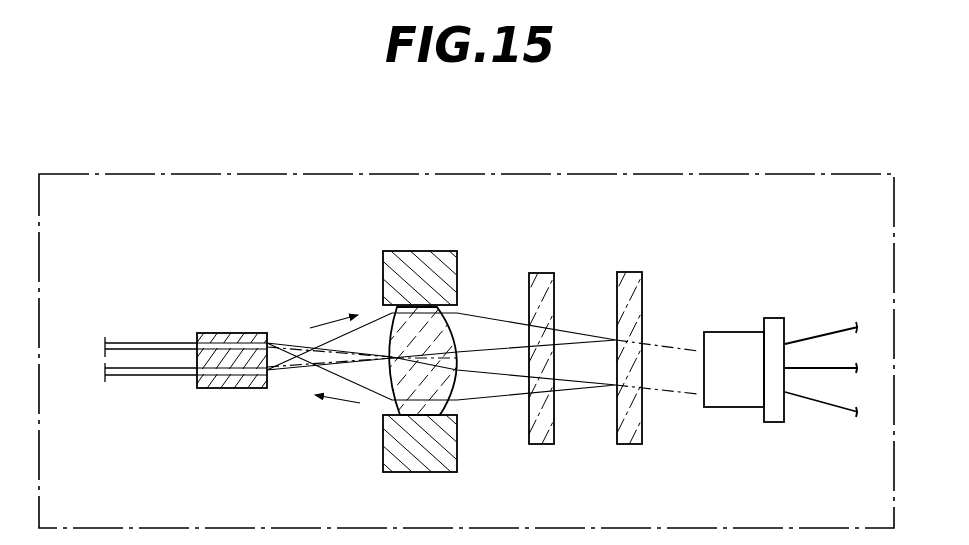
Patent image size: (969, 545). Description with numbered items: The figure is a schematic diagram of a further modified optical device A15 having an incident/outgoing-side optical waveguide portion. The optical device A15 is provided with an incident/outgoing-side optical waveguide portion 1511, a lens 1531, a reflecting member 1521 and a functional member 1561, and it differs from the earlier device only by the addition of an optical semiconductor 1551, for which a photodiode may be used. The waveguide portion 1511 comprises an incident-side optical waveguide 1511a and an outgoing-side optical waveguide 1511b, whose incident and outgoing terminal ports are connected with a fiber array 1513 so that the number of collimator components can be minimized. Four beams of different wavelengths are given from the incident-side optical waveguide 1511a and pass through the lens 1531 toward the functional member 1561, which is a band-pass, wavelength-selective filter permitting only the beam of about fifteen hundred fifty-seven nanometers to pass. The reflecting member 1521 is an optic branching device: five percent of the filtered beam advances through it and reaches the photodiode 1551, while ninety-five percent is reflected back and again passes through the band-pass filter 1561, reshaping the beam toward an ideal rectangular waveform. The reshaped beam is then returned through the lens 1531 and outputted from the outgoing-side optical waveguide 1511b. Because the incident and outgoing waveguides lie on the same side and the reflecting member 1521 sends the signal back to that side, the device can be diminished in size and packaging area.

The optical device A15 is at (647, 172).
The incident/outgoing-side optical waveguide portion 1511 is at (220, 325).
The incident-side optical waveguide 1511a is at (150, 341).
The outgoing-side optical waveguide 1511b is at (162, 377).
The fiber array 1513 is at (238, 332).
The lens 1531 is at (393, 318).
The functional member 1561 is at (528, 300).
The reflecting member 1521 is at (616, 302).
The optical semiconductor 1551 is at (721, 332).